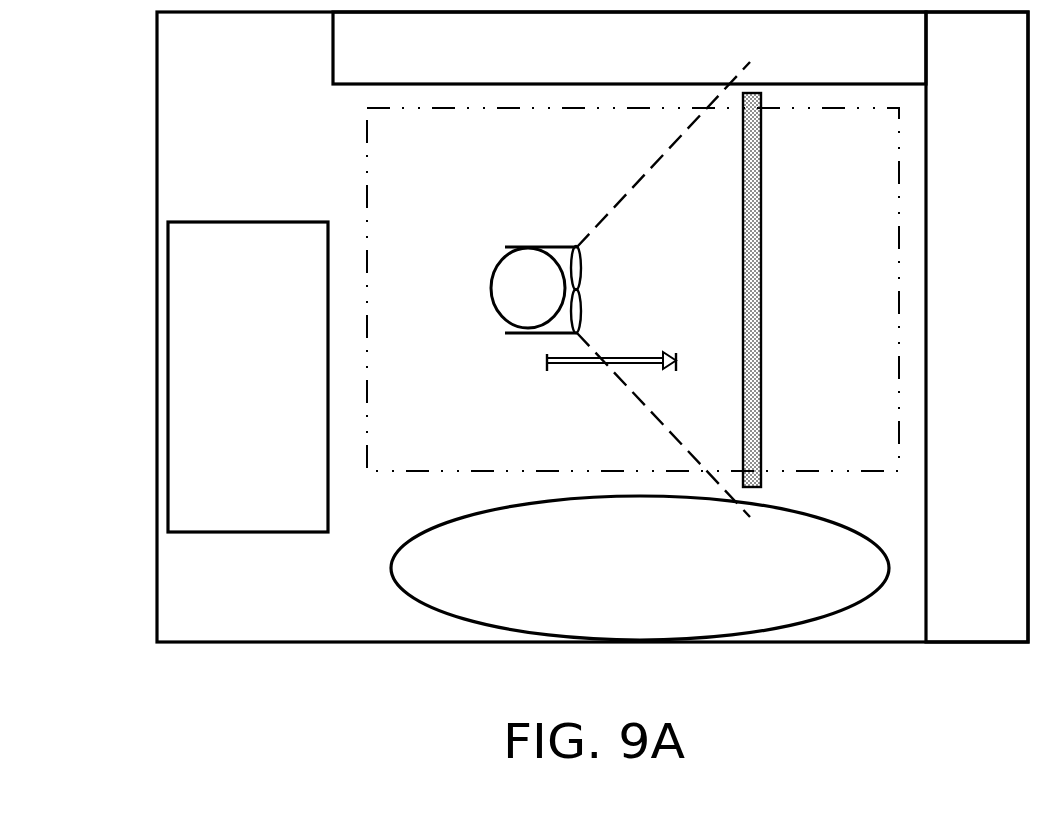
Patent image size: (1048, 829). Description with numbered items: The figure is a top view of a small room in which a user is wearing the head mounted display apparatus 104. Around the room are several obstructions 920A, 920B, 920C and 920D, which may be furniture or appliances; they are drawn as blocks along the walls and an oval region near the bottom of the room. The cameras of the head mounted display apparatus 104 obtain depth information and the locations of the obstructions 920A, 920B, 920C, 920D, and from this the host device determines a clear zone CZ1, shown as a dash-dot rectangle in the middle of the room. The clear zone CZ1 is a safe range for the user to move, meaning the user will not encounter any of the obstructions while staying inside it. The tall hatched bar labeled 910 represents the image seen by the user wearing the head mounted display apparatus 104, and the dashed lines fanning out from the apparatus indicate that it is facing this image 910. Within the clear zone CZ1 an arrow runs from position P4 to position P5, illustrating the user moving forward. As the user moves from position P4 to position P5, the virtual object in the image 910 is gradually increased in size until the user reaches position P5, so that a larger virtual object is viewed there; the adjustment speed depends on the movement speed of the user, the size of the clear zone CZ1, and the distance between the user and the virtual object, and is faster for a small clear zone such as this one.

The obstruction 920B is at (885, 65).
The obstruction 920A is at (1015, 345).
The obstruction 920D is at (288, 394).
The obstruction 920C is at (680, 585).
The image 910 is at (762, 289).
The clear zone CZ1 is at (378, 472).
The head mounted display apparatus 104 is at (554, 245).
The position P4 is at (603, 379).
The position P5 is at (676, 380).